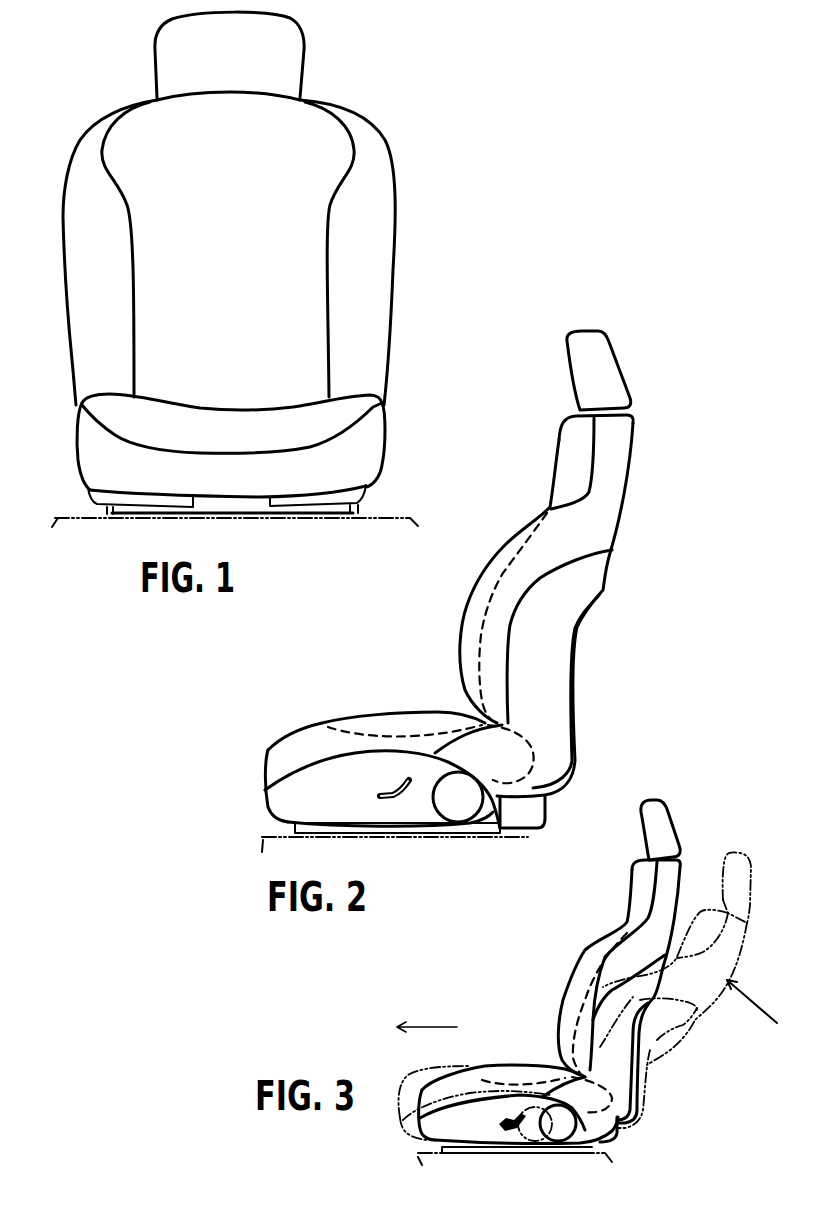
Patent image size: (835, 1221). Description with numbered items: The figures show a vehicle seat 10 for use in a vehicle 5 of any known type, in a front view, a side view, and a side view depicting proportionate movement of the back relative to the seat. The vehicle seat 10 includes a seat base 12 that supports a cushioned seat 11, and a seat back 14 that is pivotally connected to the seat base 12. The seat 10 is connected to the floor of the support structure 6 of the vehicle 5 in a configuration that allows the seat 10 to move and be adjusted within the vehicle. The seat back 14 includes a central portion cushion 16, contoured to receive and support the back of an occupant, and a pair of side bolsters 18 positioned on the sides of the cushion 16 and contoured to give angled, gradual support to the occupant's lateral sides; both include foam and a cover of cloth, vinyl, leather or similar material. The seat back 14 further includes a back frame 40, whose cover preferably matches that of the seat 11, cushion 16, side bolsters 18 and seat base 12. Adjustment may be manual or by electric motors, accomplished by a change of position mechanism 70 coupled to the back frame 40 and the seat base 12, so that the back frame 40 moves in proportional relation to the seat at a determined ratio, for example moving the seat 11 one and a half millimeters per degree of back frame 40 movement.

In FIG. 1, the vehicle 5 is at (390, 510).
In FIG. 2, the vehicle 5 is at (532, 836).
In FIG. 3, the vehicle 5 is at (623, 1155).
In FIG. 1, the support structure 6 is at (62, 518).
In FIG. 2, the support structure 6 is at (275, 841).
In FIG. 3, the support structure 6 is at (418, 1153).
In FIG. 1, the vehicle seat 10 is at (248, 263).
In FIG. 2, the vehicle seat 10 is at (468, 602).
In FIG. 3, the vehicle seat 10 is at (551, 976).
In FIG. 1, the cushioned seat 11 is at (133, 415).
In FIG. 2, the cushioned seat 11 is at (377, 710).
In FIG. 3, the cushioned seat 11 is at (480, 1080).
In FIG. 1, the seat base 12 is at (390, 450).
In FIG. 2, the seat base 12 is at (257, 745).
In FIG. 3, the seat base 12 is at (647, 1120).
In FIG. 1, the seat back 14 is at (290, 120).
In FIG. 2, the seat back 14 is at (533, 505).
In FIG. 3, the seat back 14 is at (626, 966).
In FIG. 1, the central portion cushion 16 is at (188, 197).
In FIG. 2, the central portion cushion 16 is at (555, 473).
In FIG. 3, the central portion cushion 16 is at (626, 884).
In FIG. 1, the side bolsters 18 is at (87, 220).
In FIG. 2, the side bolsters 18 is at (470, 602).
In FIG. 3, the side bolsters 18 is at (577, 975).
In FIG. 3, the back frame 40 is at (690, 1040).
In FIG. 2, the change of position mechanism 70 is at (402, 800).